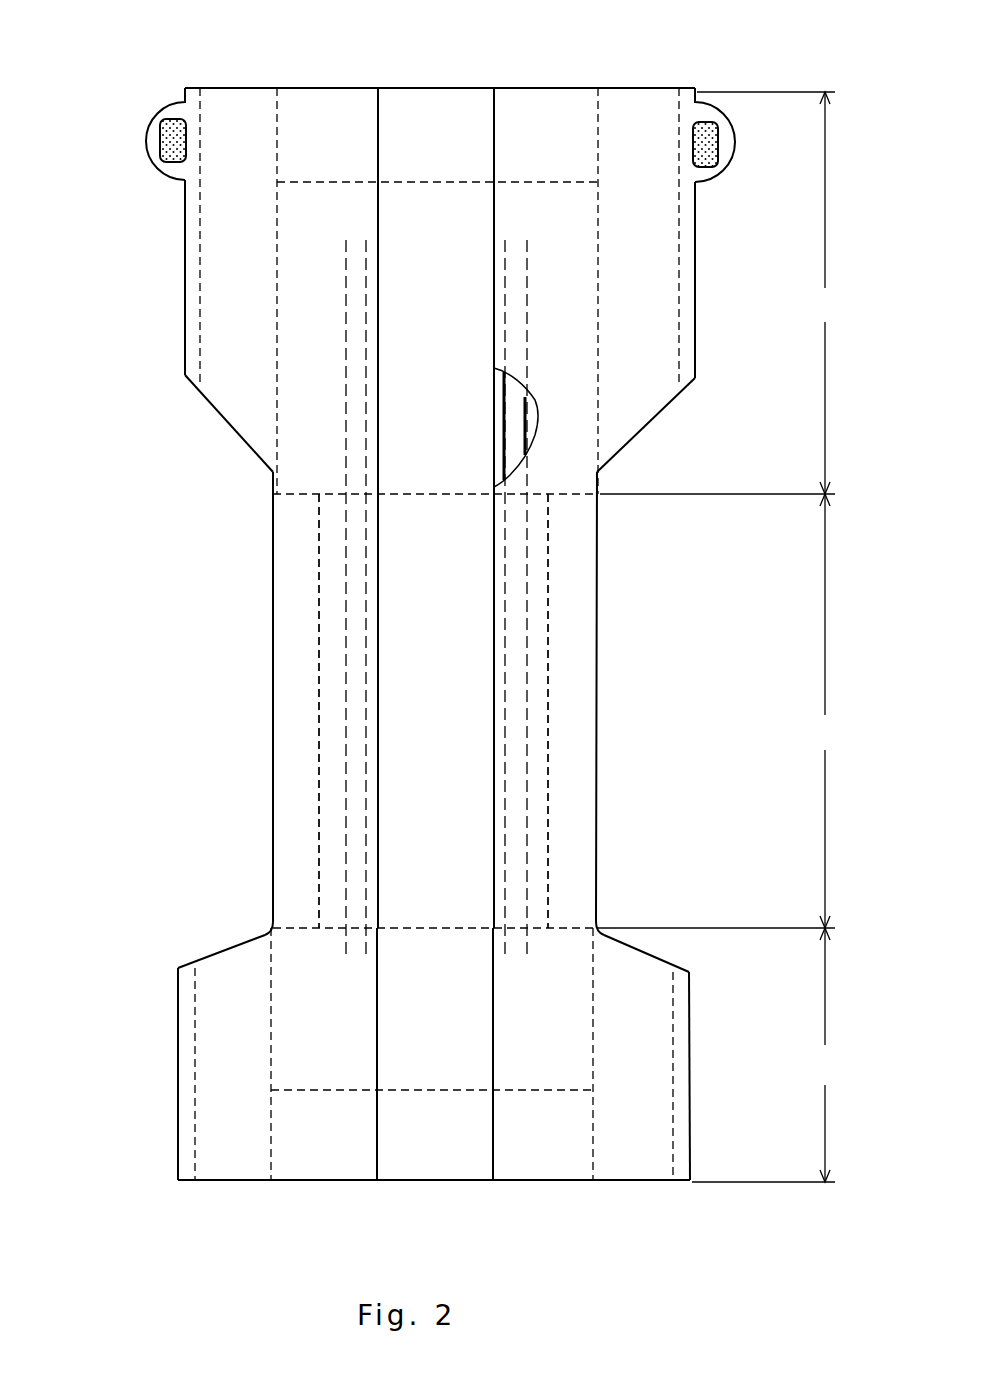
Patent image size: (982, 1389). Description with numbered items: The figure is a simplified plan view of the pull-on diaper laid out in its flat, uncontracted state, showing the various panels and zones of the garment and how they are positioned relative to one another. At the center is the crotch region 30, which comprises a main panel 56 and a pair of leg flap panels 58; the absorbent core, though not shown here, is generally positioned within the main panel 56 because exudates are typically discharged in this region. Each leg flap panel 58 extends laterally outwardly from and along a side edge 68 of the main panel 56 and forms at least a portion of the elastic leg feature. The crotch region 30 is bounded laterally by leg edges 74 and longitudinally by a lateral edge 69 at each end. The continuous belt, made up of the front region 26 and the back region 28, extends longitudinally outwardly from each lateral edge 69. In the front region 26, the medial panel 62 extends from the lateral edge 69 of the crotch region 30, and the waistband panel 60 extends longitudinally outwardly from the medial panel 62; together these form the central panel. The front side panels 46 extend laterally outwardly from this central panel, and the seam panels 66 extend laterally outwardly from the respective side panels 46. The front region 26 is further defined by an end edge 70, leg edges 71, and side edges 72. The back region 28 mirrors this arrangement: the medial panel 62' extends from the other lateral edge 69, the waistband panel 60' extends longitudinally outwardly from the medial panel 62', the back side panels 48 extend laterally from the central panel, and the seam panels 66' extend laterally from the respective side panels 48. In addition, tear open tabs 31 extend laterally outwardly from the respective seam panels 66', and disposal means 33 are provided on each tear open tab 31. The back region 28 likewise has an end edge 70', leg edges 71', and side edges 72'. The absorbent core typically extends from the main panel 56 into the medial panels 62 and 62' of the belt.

The front region 26 is at (763, 1055).
The back region 28 is at (718, 293).
The crotch region 30 is at (716, 711).
The tear open tabs 31 is at (155, 118).
The disposal means 33 is at (160, 148).
The front side panels 46 is at (217, 1114).
The back side panels 48 is at (207, 286).
The main panel 56 is at (418, 766).
The leg flap panels 58 is at (277, 766).
The waistband panel 60 is at (432, 1135).
The waistband panel 60' is at (437, 135).
The medial panel 62 is at (435, 1009).
The medial panel 62' is at (436, 338).
The seam panels 66 is at (428, 1074).
The seam panels 66' is at (434, 237).
The side edge 68 is at (319, 608).
The lateral edge 69 is at (470, 490).
The end edge 70 is at (434, 1224).
The end edge 70' is at (440, 44).
The leg edges 71 is at (472, 919).
The leg edges 71' is at (418, 432).
The side edges 72 is at (428, 1074).
The side edges 72' is at (434, 279).
The leg edges 74 is at (273, 812).